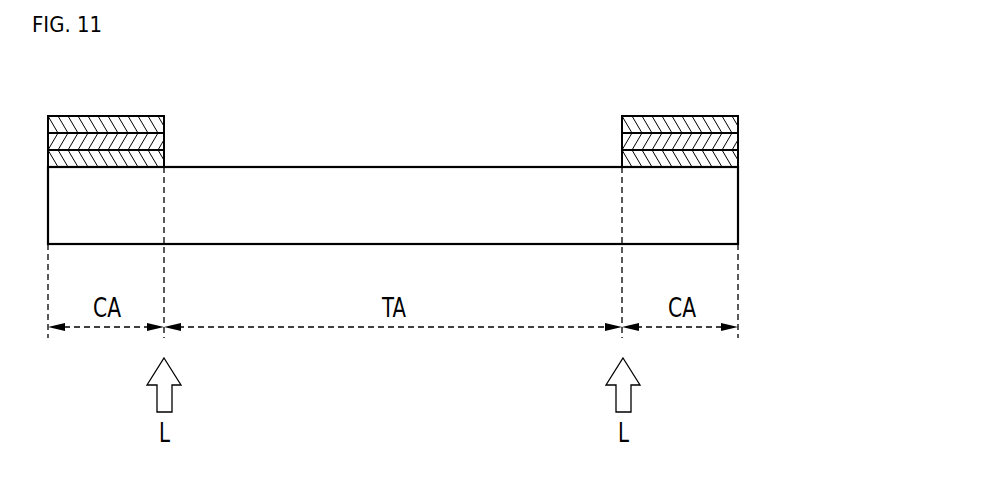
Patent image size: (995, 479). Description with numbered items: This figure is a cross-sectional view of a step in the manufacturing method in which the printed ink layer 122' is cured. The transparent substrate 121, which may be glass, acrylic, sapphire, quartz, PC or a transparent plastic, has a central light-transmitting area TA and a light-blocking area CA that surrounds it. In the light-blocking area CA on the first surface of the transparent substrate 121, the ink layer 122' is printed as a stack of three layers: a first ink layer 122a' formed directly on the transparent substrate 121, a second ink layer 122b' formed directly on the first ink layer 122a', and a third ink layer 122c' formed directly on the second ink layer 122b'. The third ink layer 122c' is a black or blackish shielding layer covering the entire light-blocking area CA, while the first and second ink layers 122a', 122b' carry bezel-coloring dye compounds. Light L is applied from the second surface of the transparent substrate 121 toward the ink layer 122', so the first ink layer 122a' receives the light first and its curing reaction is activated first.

The transparent substrate 121 is at (720, 203).
The ink layer 122' is at (472, 125).
The first ink layer 122a' is at (438, 148).
The second ink layer 122b' is at (438, 126).
The third ink layer 122c' is at (437, 106).